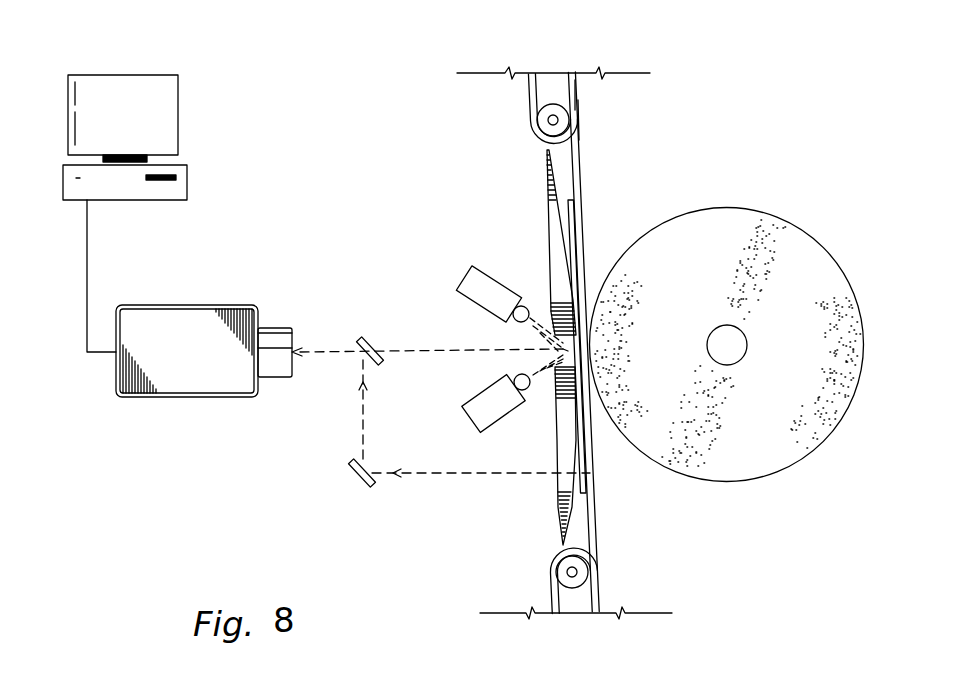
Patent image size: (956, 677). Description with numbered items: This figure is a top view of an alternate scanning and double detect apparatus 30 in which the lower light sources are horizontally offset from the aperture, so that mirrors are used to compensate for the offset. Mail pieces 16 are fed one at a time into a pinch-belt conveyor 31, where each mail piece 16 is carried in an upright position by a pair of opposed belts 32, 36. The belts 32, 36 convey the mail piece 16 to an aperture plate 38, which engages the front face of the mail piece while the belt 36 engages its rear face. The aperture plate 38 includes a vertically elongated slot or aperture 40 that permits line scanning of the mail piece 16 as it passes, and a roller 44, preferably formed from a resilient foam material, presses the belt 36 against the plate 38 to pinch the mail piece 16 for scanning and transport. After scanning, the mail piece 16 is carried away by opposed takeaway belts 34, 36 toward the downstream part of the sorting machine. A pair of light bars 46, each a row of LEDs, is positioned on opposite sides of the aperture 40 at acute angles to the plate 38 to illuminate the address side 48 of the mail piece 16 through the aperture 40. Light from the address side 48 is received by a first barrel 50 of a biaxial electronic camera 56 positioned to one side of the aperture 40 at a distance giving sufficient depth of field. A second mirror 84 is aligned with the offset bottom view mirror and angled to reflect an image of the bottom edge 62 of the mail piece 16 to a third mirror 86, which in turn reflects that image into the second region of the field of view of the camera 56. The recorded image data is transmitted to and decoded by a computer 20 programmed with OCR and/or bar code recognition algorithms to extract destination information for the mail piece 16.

The mail piece 16 is at (585, 473).
The computer 20 is at (127, 192).
The scanning and double detect apparatus 30 is at (480, 195).
The pinch-belt conveyor 31 is at (583, 111).
The belt 32 is at (551, 583).
The takeaway belt 34 is at (532, 93).
The belt 36 is at (583, 130).
The aperture plate 38 is at (560, 462).
The aperture 40 is at (560, 345).
The roller 44 is at (748, 215).
The light source 46 is at (487, 278).
The address side 48 is at (567, 222).
The first barrel 50 is at (277, 365).
The biaxial electronic camera 56 is at (208, 397).
The bottom edge 62 is at (592, 515).
The second mirror 84 is at (358, 485).
The third mirror 86 is at (372, 343).